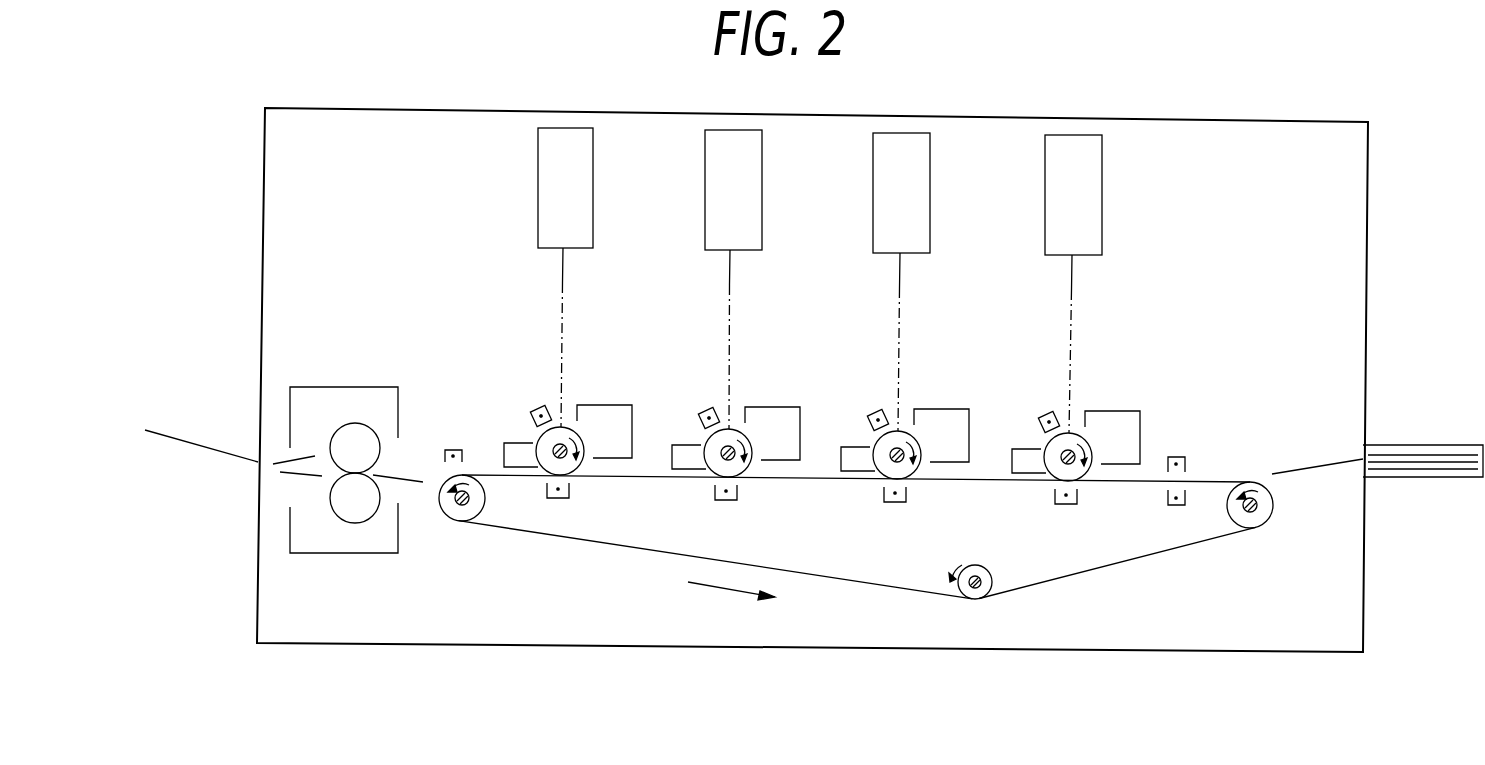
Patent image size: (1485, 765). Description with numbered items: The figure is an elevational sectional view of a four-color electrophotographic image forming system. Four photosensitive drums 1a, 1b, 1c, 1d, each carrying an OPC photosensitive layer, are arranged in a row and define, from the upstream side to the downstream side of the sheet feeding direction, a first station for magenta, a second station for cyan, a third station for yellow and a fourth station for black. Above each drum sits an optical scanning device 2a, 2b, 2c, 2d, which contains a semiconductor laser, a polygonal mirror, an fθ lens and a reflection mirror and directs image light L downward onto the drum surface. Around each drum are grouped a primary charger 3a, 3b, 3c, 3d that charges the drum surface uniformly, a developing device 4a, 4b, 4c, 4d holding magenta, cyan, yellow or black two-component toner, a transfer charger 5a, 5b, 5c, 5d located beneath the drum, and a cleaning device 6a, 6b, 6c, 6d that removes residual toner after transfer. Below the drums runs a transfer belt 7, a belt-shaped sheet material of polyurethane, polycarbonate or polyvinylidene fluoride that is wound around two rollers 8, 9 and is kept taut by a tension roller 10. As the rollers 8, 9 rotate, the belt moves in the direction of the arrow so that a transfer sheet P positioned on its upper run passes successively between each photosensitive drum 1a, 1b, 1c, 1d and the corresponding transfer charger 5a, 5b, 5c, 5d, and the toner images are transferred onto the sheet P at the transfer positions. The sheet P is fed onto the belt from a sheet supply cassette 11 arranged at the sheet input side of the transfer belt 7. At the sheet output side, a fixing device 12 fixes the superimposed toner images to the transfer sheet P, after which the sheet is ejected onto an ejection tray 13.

The photosensitive drum 1a is at (1074, 430).
The photosensitive drum 1b is at (903, 428).
The photosensitive drum 1c is at (734, 426).
The photosensitive drum 1d is at (566, 423).
The optical scanning device 2a is at (1102, 200).
The optical scanning device 2b is at (930, 198).
The optical scanning device 2c is at (762, 197).
The optical scanning device 2d is at (593, 195).
The primary charger 3a is at (1046, 412).
The primary charger 3b is at (874, 410).
The primary charger 3c is at (705, 408).
The primary charger 3d is at (537, 406).
The developing device 4a is at (1120, 410).
The developing device 4b is at (950, 408).
The developing device 4c is at (781, 406).
The developing device 4d is at (607, 404).
The transfer charger 5a is at (1070, 505).
The transfer charger 5b is at (905, 494).
The transfer charger 5c is at (731, 500).
The transfer charger 5d is at (568, 490).
The cleaning device 6a is at (1012, 449).
The cleaning device 6b is at (840, 447).
The cleaning device 6c is at (681, 445).
The cleaning device 6d is at (503, 443).
The transfer belt 7 is at (1120, 562).
The roller 8 is at (1273, 507).
The roller 9 is at (452, 521).
The tension roller 10 is at (985, 590).
The sheet supply cassette 11 is at (1445, 446).
The fixing device 12 is at (368, 387).
The ejection tray 13 is at (190, 441).
The image light L is at (565, 339).
The transfer sheet P is at (1392, 456).